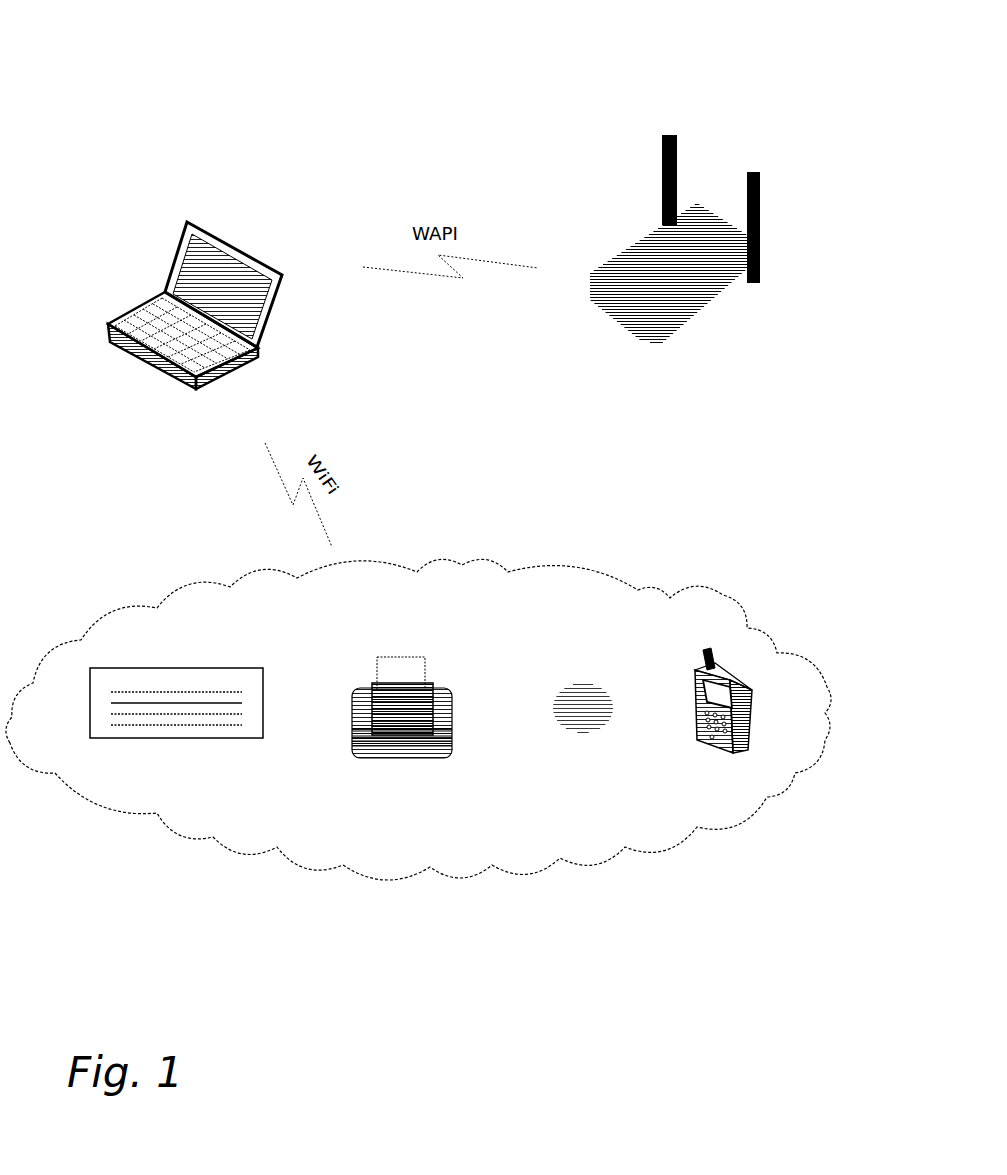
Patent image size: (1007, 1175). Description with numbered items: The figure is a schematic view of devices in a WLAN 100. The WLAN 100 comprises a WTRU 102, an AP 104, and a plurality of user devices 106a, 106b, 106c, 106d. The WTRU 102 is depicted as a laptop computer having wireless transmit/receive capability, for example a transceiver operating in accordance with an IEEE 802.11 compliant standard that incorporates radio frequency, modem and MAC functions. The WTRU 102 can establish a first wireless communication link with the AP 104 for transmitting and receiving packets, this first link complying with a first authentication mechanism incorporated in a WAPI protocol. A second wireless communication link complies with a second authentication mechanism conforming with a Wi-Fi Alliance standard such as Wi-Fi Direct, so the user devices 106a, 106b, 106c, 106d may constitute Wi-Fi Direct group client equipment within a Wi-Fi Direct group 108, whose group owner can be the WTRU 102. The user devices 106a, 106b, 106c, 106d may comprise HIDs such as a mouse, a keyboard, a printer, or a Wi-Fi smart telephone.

The WLAN 100 is at (236, 112).
The WTRU 102 is at (127, 355).
The AP 104 is at (752, 242).
The user device 106a is at (185, 738).
The user device 106b is at (392, 755).
The user device 106c is at (580, 733).
The user device 106d is at (713, 750).
The Wi-Fi Direct group 108 is at (723, 595).